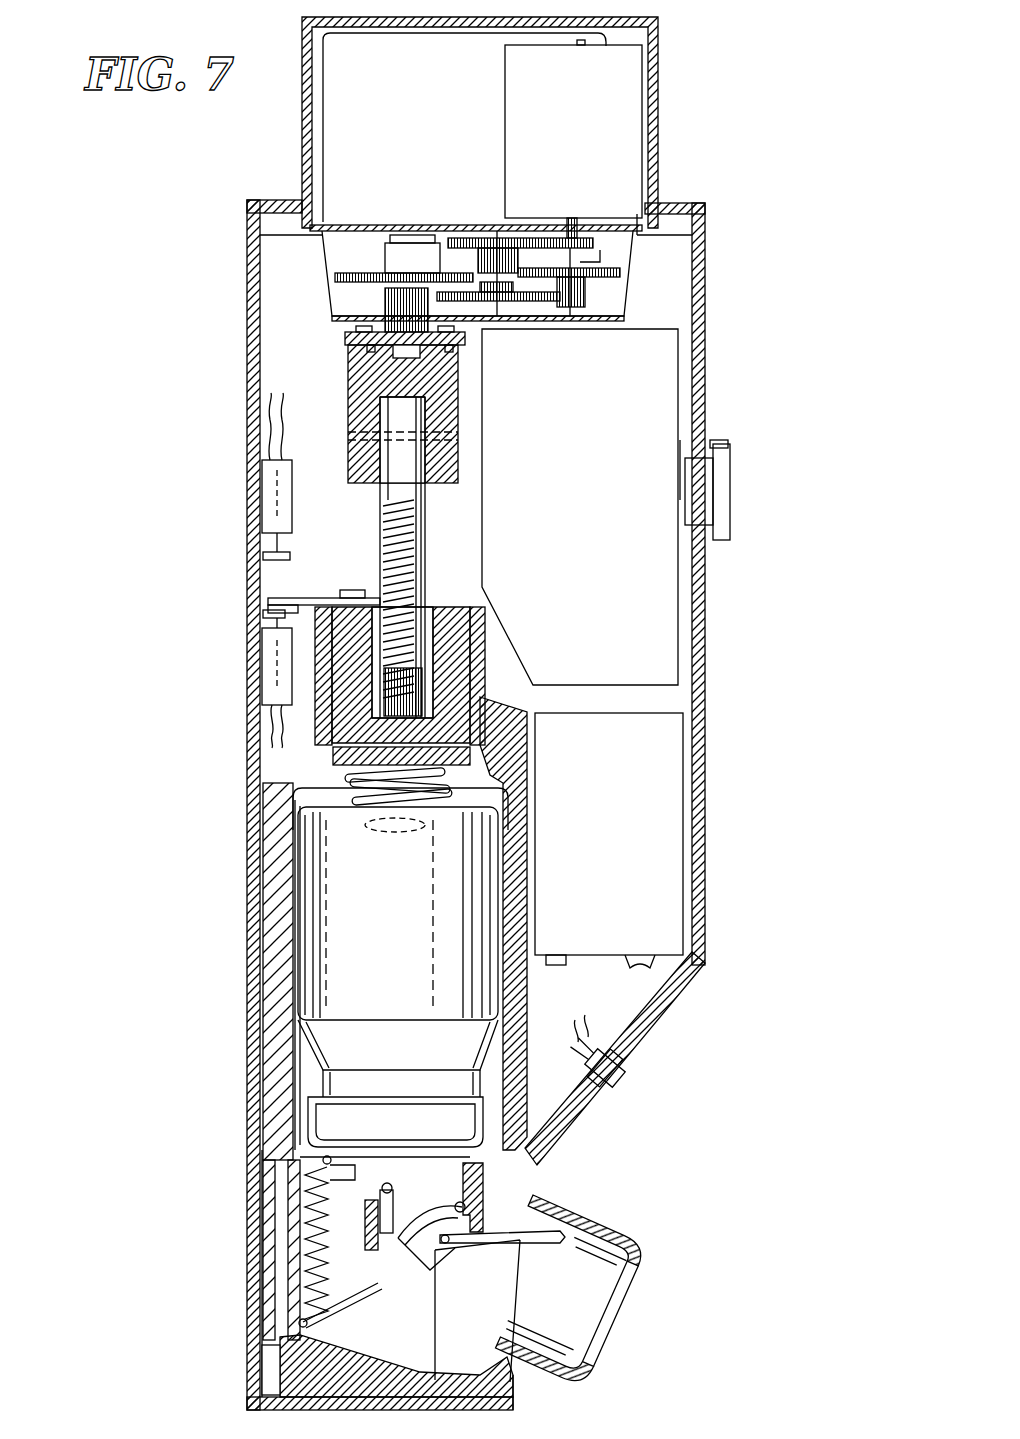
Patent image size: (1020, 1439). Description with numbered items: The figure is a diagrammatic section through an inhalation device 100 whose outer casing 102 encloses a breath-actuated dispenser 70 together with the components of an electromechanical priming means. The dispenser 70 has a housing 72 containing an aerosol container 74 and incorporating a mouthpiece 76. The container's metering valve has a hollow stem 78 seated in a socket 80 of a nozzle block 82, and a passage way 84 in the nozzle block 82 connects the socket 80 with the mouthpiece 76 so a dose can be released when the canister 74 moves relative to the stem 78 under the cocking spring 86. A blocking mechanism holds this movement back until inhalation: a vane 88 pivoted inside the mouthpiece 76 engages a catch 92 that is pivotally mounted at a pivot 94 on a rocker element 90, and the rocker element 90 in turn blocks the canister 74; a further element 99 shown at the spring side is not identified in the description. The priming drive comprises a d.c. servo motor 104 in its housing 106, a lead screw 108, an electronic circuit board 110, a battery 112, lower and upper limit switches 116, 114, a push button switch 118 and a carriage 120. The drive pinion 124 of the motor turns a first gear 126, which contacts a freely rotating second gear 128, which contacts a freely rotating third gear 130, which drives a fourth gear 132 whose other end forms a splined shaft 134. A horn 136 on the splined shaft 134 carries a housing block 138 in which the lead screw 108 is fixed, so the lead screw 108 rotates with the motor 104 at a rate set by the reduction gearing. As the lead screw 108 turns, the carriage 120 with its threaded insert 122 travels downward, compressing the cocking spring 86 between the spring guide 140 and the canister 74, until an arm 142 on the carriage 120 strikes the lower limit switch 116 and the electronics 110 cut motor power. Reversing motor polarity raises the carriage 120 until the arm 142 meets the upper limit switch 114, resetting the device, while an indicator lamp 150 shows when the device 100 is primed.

The dispenser 70 is at (435, 1271).
The housing 72 is at (278, 901).
The aerosol container 74 is at (312, 961).
The mouthpiece 76 is at (622, 1254).
The hollow stem 78 is at (380, 1216).
The socket 80 is at (368, 1258).
The nozzle block 82 is at (376, 1289).
The passage way 84 is at (417, 1272).
The cocking spring 86 is at (345, 799).
The vane 88 is at (545, 1243).
The rocker element 90 is at (405, 1160).
The catch 92 is at (412, 1242).
The pivot 94 is at (458, 1165).
The return spring 99 is at (305, 1259).
The inhalation device 100 is at (516, 713).
The outer casing 102 is at (703, 302).
The d.c. servo motor 104 is at (597, 117).
The housing 106 is at (658, 82).
The lead screw 108 is at (380, 533).
The electronic circuit board 110 is at (680, 606).
The battery 112 is at (662, 787).
The upper limit switch 114 is at (262, 518).
The lower limit switch 116 is at (262, 690).
The push button switch 118 is at (728, 486).
The carriage 120 is at (345, 722).
The threaded insert 122 is at (438, 606).
The drive pinion 124 is at (598, 248).
The first gear 126 is at (460, 238).
The second gear 128 is at (600, 320).
The third gear 130 is at (533, 320).
The fourth gear 132 is at (360, 268).
The splined shaft 134 is at (333, 292).
The horn 136 is at (345, 338).
The housing block 138 is at (360, 369).
The spring guide 140 is at (458, 757).
The arm 142 is at (287, 598).
The indicator lamp 150 is at (642, 1071).